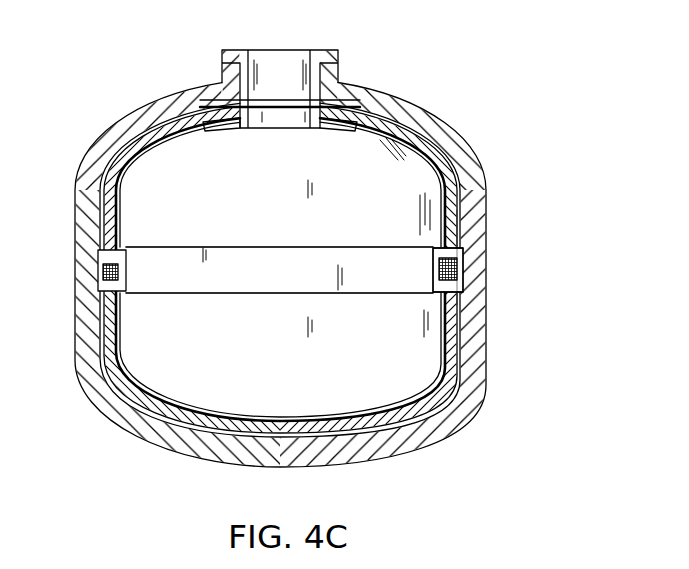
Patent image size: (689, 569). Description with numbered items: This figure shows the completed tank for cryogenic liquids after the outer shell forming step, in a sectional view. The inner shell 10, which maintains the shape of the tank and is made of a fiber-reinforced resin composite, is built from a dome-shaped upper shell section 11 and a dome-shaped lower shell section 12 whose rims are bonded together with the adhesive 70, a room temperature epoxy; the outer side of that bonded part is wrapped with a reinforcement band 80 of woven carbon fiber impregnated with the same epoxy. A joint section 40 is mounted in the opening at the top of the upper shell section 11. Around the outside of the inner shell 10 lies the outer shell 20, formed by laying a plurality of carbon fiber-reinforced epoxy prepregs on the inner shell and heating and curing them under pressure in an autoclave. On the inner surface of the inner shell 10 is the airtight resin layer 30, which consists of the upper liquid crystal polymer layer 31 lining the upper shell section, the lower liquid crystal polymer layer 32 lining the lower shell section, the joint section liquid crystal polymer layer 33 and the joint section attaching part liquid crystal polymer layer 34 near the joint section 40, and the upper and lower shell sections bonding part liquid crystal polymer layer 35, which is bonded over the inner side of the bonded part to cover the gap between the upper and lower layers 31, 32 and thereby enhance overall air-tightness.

The inner shell 10 is at (533, 207).
The upper shell section 11 is at (449, 196).
The lower shell section 12 is at (452, 326).
The outer shell 20 is at (447, 137).
The airtight resin layer 30 is at (291, 158).
The upper liquid crystal polymer layer 31 is at (143, 158).
The lower liquid crystal polymer layer 32 is at (177, 402).
The joint section liquid crystal polymer layer 33 is at (252, 106).
The joint section attaching part liquid crystal polymer layer 34 is at (203, 127).
The upper and lower shell sections bonding part liquid crystal polymer layer 35 is at (127, 271).
The joint section 40 is at (340, 59).
The adhesive 70 is at (436, 283).
The reinforcement band 80 is at (103, 268).